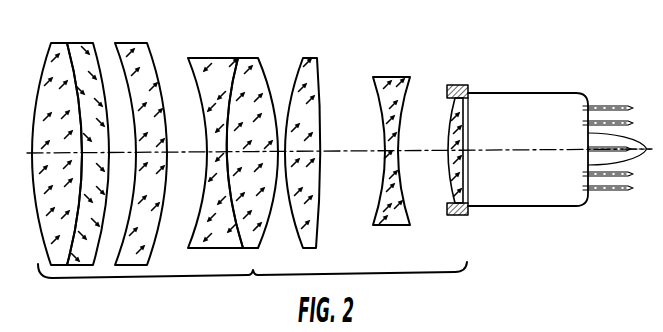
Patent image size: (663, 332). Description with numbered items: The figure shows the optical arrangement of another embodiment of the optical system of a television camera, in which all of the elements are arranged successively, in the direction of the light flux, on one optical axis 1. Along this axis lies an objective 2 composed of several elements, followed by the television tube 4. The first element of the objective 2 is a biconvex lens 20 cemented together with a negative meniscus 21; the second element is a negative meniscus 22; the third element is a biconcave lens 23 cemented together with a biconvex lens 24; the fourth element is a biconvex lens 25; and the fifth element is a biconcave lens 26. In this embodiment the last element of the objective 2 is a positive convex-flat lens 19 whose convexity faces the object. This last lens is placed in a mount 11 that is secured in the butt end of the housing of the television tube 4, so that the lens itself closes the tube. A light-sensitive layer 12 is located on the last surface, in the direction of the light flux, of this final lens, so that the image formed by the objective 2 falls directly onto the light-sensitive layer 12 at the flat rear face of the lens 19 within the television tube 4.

The optical axis 1 is at (353, 153).
The objective 2 is at (252, 287).
The television tube 4 is at (512, 97).
The mount 11 is at (450, 91).
The light-sensitive layer 12 is at (461, 193).
The positive convex-flat lens 19 is at (461, 95).
The biconvex lens 20 is at (58, 43).
The negative meniscus 21 is at (80, 43).
The negative meniscus 22 is at (138, 43).
The biconcave lens 23 is at (211, 62).
The biconvex lens 24 is at (252, 62).
The biconvex lens 25 is at (308, 60).
The biconcave lens 26 is at (388, 85).